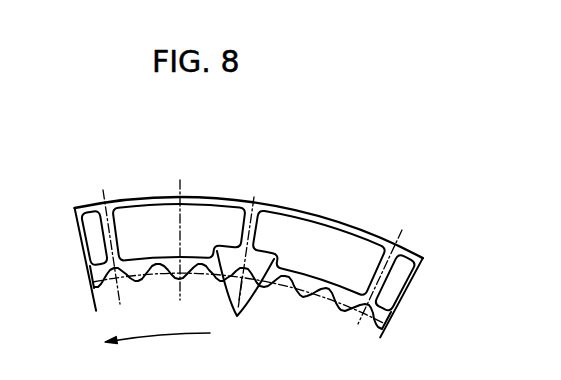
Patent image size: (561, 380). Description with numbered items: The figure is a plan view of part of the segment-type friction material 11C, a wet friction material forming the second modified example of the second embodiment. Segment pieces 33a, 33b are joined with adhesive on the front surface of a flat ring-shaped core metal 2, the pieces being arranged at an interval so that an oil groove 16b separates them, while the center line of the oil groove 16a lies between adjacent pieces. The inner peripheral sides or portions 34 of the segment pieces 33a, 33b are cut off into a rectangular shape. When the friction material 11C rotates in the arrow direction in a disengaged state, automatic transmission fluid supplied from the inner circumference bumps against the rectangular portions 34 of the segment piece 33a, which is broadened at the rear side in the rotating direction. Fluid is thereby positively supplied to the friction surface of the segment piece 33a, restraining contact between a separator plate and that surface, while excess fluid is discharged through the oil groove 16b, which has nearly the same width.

The core metal 2 is at (363, 228).
The segment-type friction material 11C is at (278, 182).
The oil groove 16a is at (247, 210).
The oil groove 16b is at (104, 207).
The segment piece 33a is at (308, 230).
The segment piece 33b is at (168, 206).
The inner peripheral portion 34 is at (245, 297).